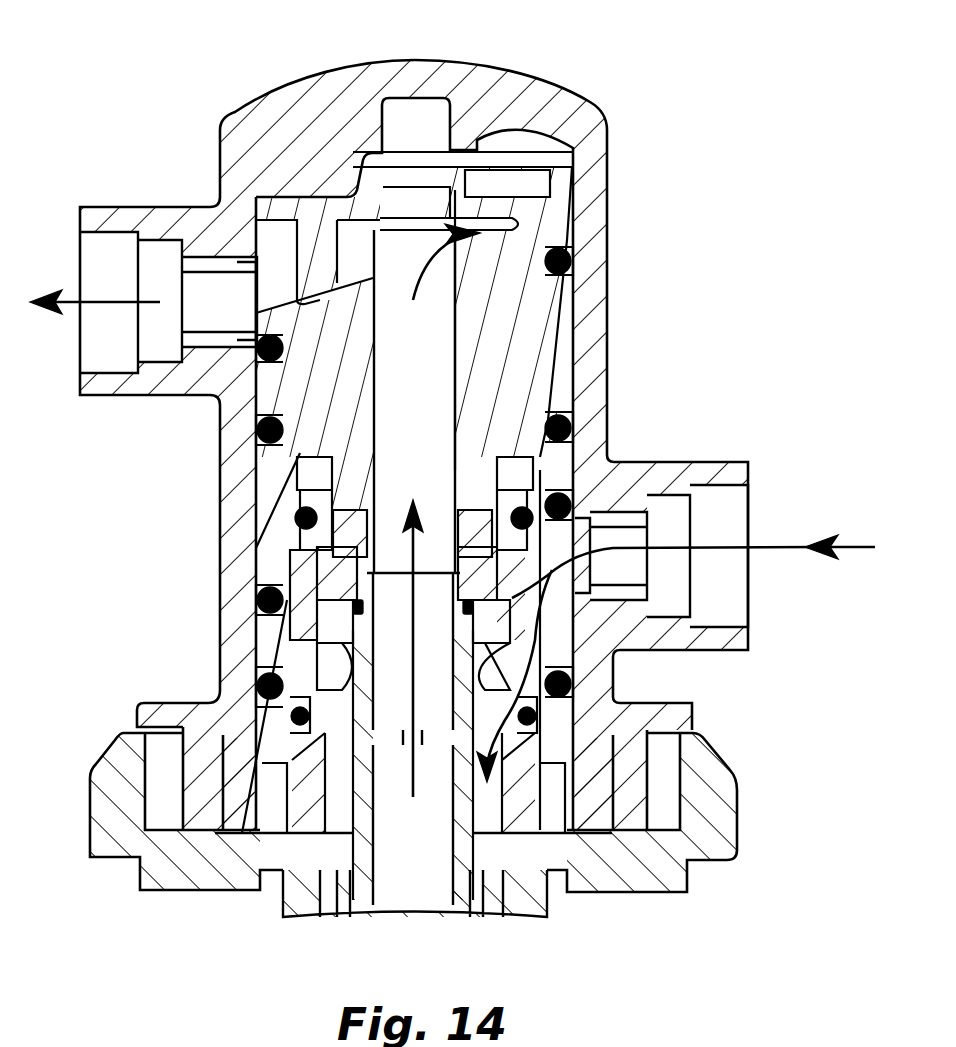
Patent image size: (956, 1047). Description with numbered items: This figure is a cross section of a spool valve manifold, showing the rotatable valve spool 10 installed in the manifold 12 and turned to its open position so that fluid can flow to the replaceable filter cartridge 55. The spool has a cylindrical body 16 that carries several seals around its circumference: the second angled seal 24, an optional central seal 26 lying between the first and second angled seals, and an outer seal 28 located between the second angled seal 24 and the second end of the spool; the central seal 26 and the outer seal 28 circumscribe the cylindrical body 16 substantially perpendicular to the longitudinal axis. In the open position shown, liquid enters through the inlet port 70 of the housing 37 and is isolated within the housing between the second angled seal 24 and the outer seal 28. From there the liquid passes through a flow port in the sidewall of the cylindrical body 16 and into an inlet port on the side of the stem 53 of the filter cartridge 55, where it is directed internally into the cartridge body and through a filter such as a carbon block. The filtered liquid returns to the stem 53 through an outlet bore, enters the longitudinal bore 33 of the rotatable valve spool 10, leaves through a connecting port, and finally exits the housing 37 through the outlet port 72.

The manifold 12 is at (446, 501).
The rotatable valve spool 10 is at (414, 424).
The housing 37 is at (527, 88).
The outlet port 72 is at (100, 264).
The inlet port 70 is at (738, 598).
The cylindrical body 16 is at (262, 497).
The central seal 26 is at (258, 430).
The second angled seal 24 is at (258, 601).
The outer seal 28 is at (258, 684).
The stem 53 is at (320, 565).
The longitudinal bore 33 is at (430, 402).
The filter cartridge 55 is at (305, 905).